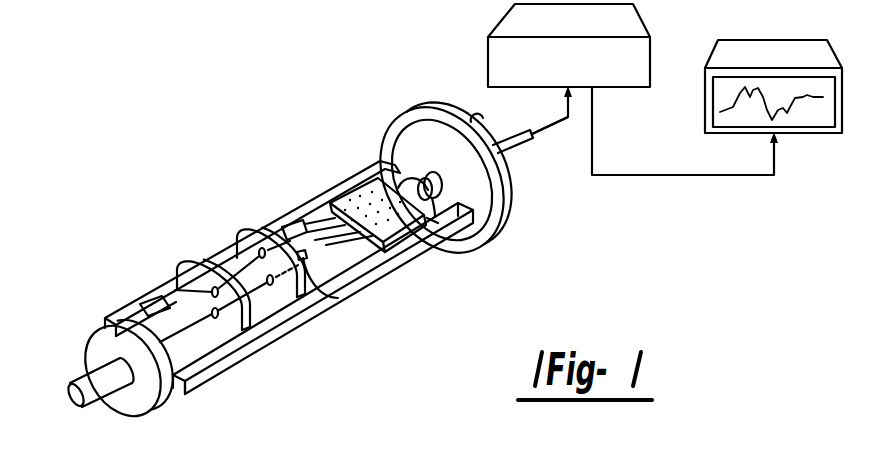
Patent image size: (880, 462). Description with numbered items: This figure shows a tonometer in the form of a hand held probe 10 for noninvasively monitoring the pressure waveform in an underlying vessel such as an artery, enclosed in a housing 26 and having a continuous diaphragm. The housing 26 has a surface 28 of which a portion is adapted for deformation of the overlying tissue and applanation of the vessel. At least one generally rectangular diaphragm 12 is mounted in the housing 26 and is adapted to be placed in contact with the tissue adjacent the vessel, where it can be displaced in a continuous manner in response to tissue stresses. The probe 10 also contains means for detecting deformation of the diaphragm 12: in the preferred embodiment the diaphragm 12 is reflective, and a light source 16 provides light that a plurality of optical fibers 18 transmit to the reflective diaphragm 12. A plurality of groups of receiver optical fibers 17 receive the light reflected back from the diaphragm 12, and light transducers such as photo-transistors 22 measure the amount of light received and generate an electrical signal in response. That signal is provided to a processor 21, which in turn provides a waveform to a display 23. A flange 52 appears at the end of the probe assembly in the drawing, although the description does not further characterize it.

The hand held probe 10 is at (350, 145).
The diaphragm 12 is at (72, 399).
The light source 16 is at (338, 298).
The receiver optical fibers 17 is at (176, 291).
The optical fibers 18 is at (196, 335).
The processor 21 is at (652, 72).
The photo-transistors 22 is at (343, 192).
The display 23 is at (843, 100).
The housing 26 is at (283, 218).
The surface 28 is at (68, 378).
The mounting flange 52 is at (420, 252).